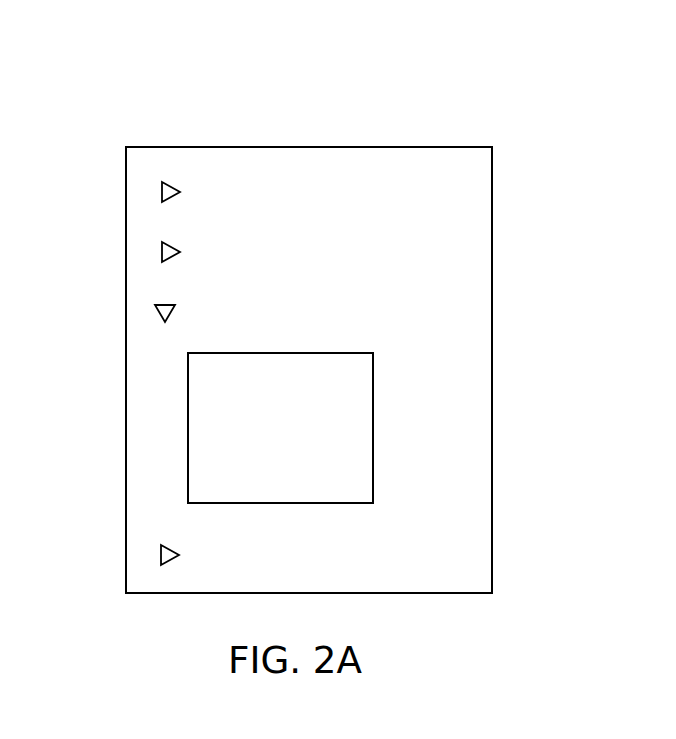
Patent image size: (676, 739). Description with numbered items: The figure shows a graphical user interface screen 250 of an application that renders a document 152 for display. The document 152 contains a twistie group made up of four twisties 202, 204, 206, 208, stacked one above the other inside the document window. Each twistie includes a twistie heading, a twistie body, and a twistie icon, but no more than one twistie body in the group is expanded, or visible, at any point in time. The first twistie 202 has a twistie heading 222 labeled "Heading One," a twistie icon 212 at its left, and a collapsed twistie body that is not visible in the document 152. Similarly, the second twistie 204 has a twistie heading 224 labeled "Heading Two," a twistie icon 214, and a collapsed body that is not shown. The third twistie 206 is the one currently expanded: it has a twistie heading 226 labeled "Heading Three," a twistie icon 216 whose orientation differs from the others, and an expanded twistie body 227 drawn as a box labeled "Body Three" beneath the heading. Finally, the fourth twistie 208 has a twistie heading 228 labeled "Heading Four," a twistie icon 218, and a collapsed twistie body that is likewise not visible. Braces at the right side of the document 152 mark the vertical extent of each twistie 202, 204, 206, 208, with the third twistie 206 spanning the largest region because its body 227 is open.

The document 152 is at (377, 147).
The GUI screen 250 is at (563, 84).
The twistie 202 is at (503, 168).
The twistie 204 is at (503, 230).
The twistie 206 is at (503, 300).
The twistie 208 is at (503, 528).
The twistie icon 212 is at (145, 193).
The twistie icon 214 is at (145, 253).
The twistie icon 216 is at (153, 312).
The twistie icon 218 is at (145, 556).
The twistie heading 222 is at (333, 193).
The twistie heading 224 is at (333, 253).
The twistie heading 226 is at (333, 313).
The expanded twistie body 227 is at (373, 383).
The twistie heading 228 is at (330, 557).